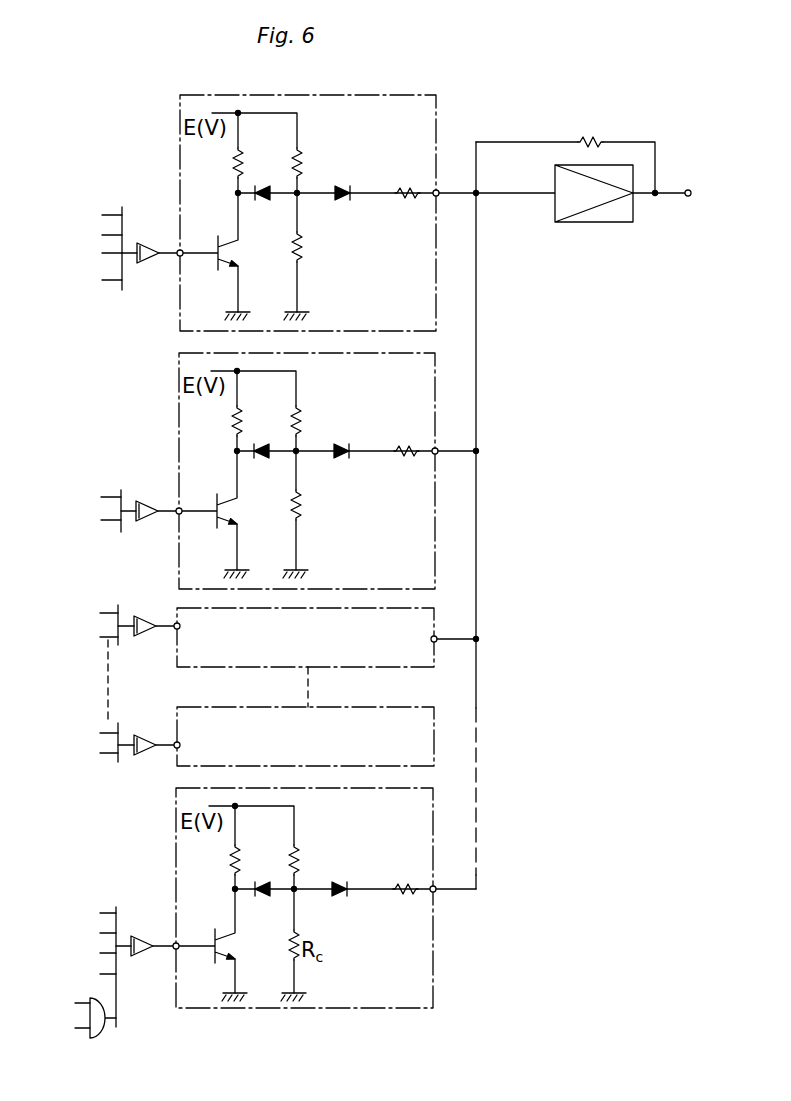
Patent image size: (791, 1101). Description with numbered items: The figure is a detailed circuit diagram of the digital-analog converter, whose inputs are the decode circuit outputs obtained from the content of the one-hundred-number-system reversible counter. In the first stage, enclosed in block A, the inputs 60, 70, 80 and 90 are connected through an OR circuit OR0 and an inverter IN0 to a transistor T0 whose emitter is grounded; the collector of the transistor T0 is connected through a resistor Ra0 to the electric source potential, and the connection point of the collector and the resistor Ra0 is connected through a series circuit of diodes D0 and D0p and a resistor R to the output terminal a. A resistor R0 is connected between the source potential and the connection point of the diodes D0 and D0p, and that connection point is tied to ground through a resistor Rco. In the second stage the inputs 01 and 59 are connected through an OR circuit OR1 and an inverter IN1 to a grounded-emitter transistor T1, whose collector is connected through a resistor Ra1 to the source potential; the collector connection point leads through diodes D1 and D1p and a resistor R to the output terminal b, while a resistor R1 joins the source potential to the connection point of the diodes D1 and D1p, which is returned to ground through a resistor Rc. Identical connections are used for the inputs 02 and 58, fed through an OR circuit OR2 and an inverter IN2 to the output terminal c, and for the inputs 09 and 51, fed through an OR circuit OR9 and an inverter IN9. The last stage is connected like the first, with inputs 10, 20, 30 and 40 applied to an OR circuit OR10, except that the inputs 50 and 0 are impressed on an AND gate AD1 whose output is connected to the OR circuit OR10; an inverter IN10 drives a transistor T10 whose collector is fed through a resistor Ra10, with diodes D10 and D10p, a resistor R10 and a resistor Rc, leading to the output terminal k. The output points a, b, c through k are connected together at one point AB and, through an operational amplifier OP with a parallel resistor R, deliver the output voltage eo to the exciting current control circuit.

The input circuit block A is at (426, 99).
The resistor Ra0 is at (257, 170).
The resistor R0 is at (310, 170).
The diode D0 is at (267, 210).
The diode D0p is at (350, 210).
The resistor Rco is at (309, 256).
The transistor T0 is at (231, 246).
The inverter IN0 is at (150, 262).
The OR circuit OR0 is at (122, 226).
The input 60 is at (98, 214).
The input 70 is at (98, 234).
The input 80 is at (98, 252).
The input 90 is at (98, 279).
The output terminal a is at (454, 205).
The resistor Ra1 is at (256, 428).
The resistor R1 is at (309, 428).
The diode D1 is at (266, 468).
The diode D1p is at (349, 468).
The resistor Rc is at (304, 514).
The transistor T1 is at (227, 514).
The inverter IN1 is at (151, 533).
The OR circuit OR1 is at (141, 494).
The input 01 is at (97, 496).
The input 59 is at (97, 519).
The output terminal b is at (454, 464).
The output terminal c is at (453, 629).
The inverter IN2 is at (150, 635).
The OR circuit OR2 is at (118, 614).
The input 02 is at (95, 612).
The input 58 is at (95, 636).
The inverter IN9 is at (147, 737).
The OR circuit OR9 is at (118, 762).
The input 09 is at (95, 732).
The input 51 is at (95, 752).
The resistor Ra10 is at (258, 867).
The resistor R10 is at (311, 867).
The diode D10 is at (267, 906).
The diode D10p is at (346, 906).
The transistor T10 is at (228, 939).
The inverter IN10 is at (146, 937).
The OR circuit OR10 is at (116, 972).
The input 10 is at (94, 912).
The input 20 is at (94, 932).
The input 30 is at (94, 952).
The input 40 is at (94, 973).
The AND gate AD1 is at (101, 1034).
The input 50 is at (69, 1002).
The input 0 is at (75, 1027).
The output terminal k is at (453, 879).
The connection point AB is at (491, 515).
The resistor R is at (525, 504).
The operational amplifier OP is at (606, 213).
The output voltage eo is at (702, 196).